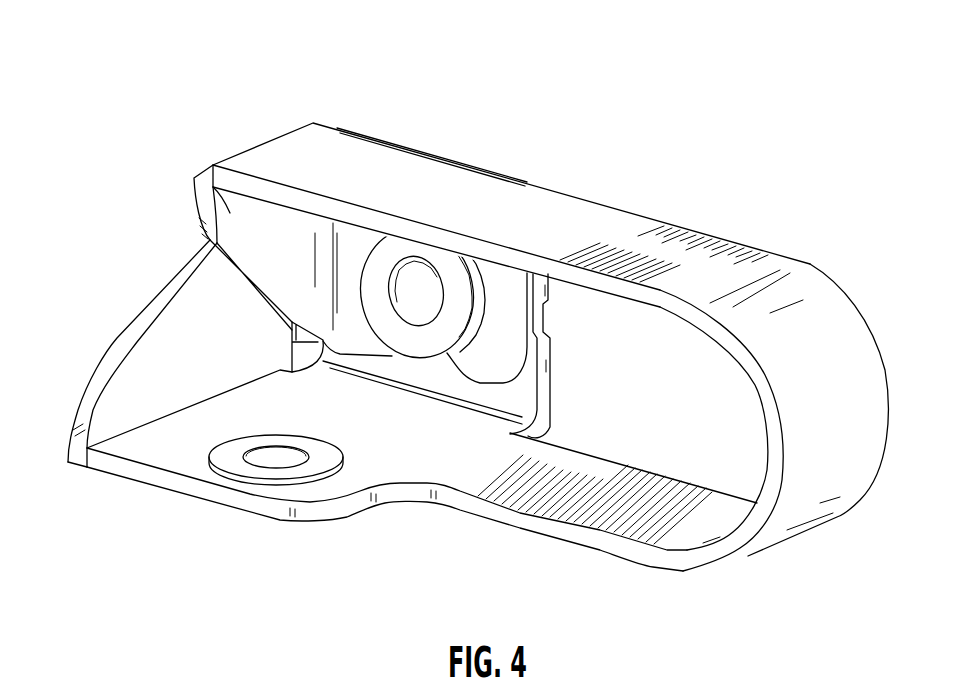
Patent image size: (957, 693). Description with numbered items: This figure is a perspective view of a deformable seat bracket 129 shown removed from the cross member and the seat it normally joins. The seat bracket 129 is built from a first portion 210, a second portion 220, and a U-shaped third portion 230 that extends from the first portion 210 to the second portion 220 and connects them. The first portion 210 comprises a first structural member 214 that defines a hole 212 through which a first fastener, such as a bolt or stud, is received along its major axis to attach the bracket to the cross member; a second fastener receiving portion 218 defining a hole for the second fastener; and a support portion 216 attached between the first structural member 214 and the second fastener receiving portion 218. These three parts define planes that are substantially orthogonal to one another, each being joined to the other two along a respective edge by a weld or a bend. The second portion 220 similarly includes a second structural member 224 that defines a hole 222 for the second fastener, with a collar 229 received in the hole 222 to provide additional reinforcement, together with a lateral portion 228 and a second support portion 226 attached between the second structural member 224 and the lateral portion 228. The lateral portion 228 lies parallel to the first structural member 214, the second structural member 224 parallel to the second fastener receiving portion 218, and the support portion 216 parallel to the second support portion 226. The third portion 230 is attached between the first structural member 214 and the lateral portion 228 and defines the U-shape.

The seat bracket 129 is at (108, 143).
The first portion 210 is at (363, 540).
The hole 212 is at (270, 461).
The first structural member 214 is at (182, 448).
The support portion 216 is at (152, 373).
The second fastener receiving portion 218 is at (528, 385).
The second portion 220 is at (320, 85).
The hole 222 is at (423, 285).
The second structural member 224 is at (493, 312).
The second support portion 226 is at (200, 176).
The lateral portion 228 is at (363, 150).
The collar 229 is at (383, 262).
The third portion 230 is at (793, 293).